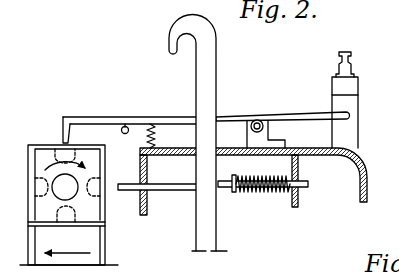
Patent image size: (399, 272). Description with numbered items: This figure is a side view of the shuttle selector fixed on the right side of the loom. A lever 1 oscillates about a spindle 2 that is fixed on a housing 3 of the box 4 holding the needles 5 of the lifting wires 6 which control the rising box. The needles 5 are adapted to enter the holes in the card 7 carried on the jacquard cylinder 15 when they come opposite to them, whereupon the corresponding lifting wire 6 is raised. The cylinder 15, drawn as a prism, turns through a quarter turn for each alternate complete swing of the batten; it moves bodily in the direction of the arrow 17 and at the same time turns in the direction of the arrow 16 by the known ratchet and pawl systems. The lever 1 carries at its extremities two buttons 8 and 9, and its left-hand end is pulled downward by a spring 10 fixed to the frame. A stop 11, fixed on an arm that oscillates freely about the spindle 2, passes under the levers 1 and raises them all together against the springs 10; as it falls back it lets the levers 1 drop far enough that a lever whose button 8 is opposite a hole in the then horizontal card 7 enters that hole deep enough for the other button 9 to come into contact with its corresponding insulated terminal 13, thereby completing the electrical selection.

The lever 1 is at (106, 117).
The spindle 2 is at (259, 120).
The housing 3 is at (187, 148).
The box 4 is at (291, 204).
The needle 5 is at (172, 184).
The lifting wire 6 is at (198, 132).
The card 7 is at (69, 196).
The button 8 is at (70, 134).
The button 9 is at (350, 114).
The spring 10 is at (161, 136).
The stop 11 is at (125, 140).
The terminal 13 is at (354, 64).
The jacquard cylinder 15 is at (57, 219).
The arrow 16 is at (74, 159).
The arrow 17 is at (67, 261).